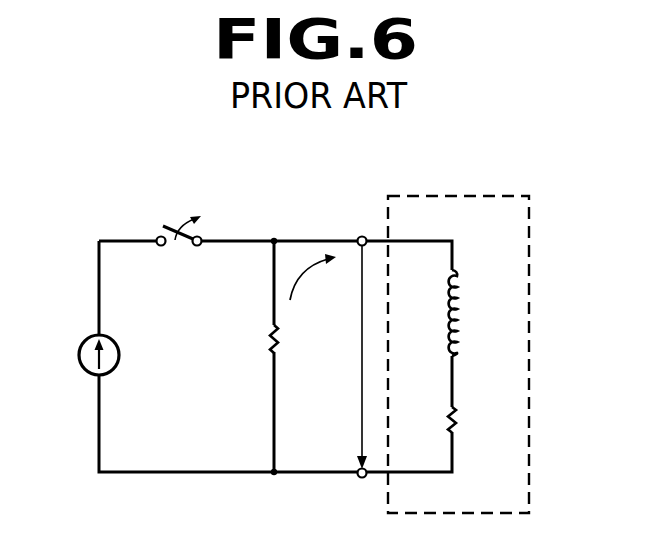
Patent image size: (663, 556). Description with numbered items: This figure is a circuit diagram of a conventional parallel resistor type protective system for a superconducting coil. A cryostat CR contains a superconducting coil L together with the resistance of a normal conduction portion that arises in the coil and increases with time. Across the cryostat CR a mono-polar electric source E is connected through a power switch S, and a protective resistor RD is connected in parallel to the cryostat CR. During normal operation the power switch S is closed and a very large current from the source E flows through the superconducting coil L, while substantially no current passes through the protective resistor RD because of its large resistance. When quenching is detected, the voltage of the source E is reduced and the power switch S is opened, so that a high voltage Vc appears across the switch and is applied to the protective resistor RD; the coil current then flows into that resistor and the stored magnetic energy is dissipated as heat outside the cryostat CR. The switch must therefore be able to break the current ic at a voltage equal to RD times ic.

The mono-polar electric source E is at (79, 357).
The power switch S is at (177, 216).
The protective resistor RD is at (246, 332).
The current ic is at (313, 285).
The high voltage Vc is at (342, 357).
The cryostat CR is at (447, 196).
The superconducting coil L is at (468, 313).